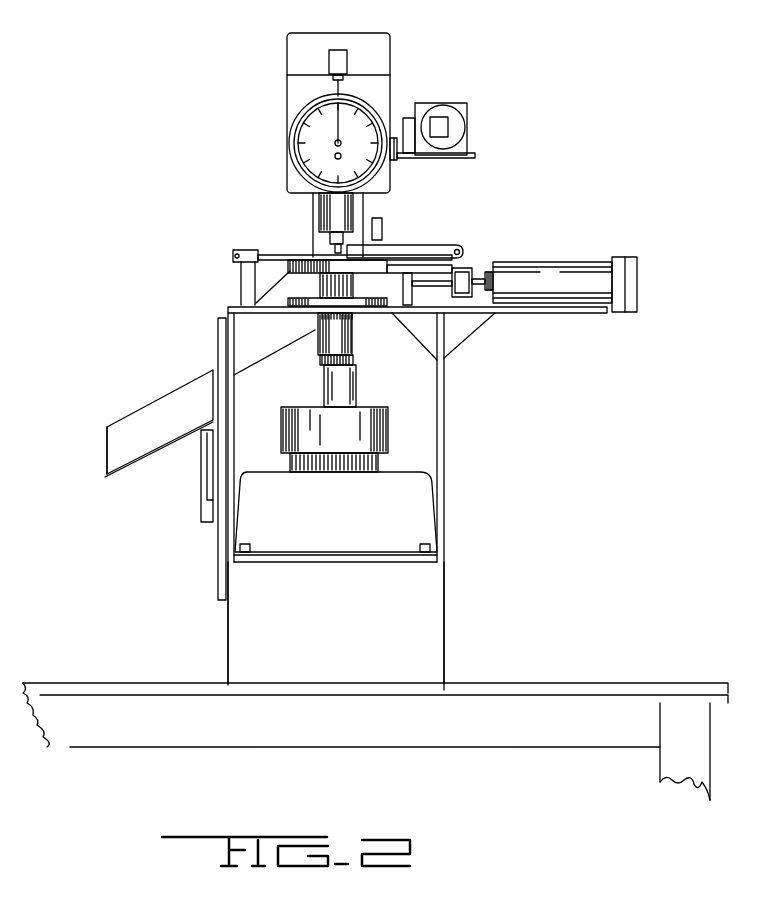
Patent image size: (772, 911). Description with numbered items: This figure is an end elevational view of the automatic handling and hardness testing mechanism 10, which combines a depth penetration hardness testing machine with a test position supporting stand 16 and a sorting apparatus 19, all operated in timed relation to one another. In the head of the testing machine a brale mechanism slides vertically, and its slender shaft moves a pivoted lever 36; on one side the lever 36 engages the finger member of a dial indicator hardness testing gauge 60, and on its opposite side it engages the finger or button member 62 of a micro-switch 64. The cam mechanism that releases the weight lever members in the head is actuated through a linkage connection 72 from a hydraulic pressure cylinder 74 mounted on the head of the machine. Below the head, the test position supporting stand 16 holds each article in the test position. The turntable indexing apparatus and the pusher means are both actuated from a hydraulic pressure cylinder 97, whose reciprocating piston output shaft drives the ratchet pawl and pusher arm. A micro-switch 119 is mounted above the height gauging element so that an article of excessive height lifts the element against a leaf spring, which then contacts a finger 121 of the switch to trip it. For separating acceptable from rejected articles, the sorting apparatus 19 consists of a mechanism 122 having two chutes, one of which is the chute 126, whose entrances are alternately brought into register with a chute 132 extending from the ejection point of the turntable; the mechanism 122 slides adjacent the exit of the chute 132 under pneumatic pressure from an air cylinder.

The automatic handling and hardness testing mechanism 10 is at (222, 250).
The test position supporting stand 16 is at (357, 370).
The sorting apparatus 19 is at (155, 454).
The lever 36 is at (338, 86).
The dial indicator hardness testing gauge 60 is at (310, 142).
The finger or button member 62 is at (352, 78).
The micro-switch 64 is at (342, 62).
The linkage connection 72 is at (420, 122).
The hydraulic pressure cylinder 74 is at (462, 128).
The hydraulic pressure cylinder 97 is at (553, 268).
The micro-switch 119 is at (378, 222).
The finger 121 is at (385, 243).
The mechanism 122 is at (153, 420).
The chute 126 is at (198, 410).
The chute 132 is at (220, 340).